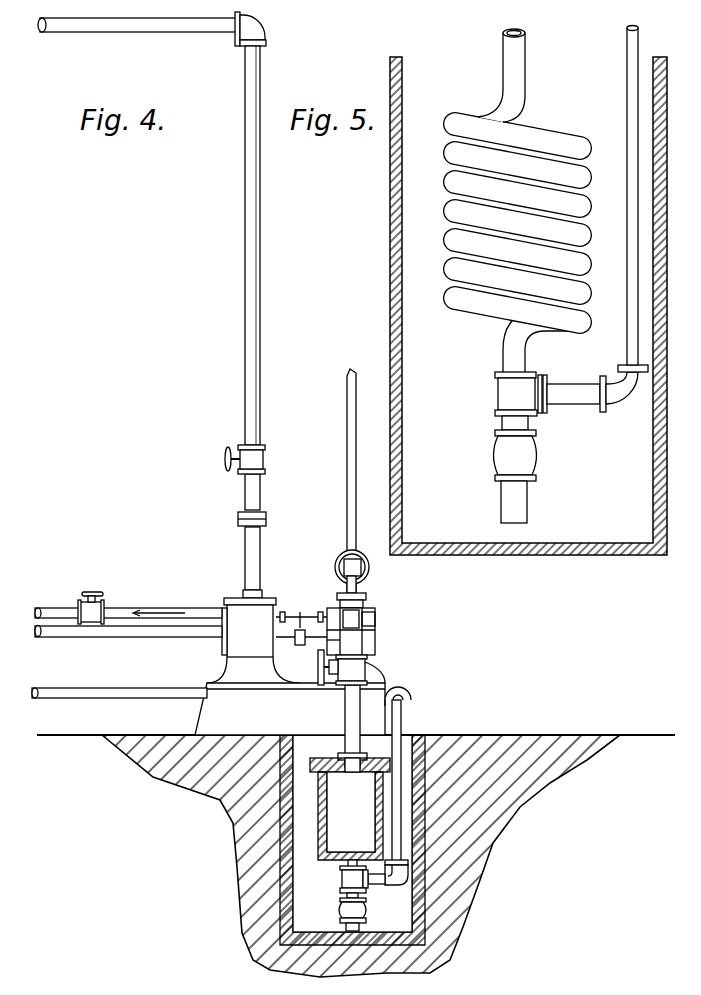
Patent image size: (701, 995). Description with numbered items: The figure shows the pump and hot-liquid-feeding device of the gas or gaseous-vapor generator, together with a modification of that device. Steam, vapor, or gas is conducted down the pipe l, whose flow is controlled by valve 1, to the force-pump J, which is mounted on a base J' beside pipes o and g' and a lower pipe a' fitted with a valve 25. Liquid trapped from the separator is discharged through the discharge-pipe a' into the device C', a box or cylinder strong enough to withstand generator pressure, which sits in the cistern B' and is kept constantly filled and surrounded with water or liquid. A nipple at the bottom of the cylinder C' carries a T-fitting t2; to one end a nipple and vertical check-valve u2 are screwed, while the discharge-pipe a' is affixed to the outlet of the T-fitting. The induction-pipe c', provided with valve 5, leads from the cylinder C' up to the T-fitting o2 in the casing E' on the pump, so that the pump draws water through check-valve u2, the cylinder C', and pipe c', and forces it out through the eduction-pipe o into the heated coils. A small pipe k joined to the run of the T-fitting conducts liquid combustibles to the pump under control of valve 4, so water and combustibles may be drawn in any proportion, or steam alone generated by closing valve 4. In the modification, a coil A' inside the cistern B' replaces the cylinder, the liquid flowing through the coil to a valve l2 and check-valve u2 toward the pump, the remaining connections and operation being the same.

In FIG. 4, the supply pipe l is at (247, 318).
In FIG. 4, the valve 1 is at (238, 459).
In FIG. 4, the small pipe k is at (344, 481).
In FIG. 4, the valve 4 is at (360, 571).
In FIG. 4, the T-fitting o2 is at (349, 619).
In FIG. 4, the valve casing E' is at (368, 624).
In FIG. 4, the induction-pipe c' is at (345, 700).
In FIG. 4, the valve 5 is at (351, 667).
In FIG. 4, the force-pump J is at (253, 636).
In FIG. 4, the base J' is at (290, 709).
In FIG. 4, the eduction-pipe o is at (128, 606).
In FIG. 4, the pipe g' is at (128, 640).
In FIG. 4, the discharge-pipe a' is at (226, 788).
In FIG. 5, the discharge-pipe a' is at (597, 221).
In FIG. 4, the valve 25 is at (91, 601).
In FIG. 4, the cylinder C' is at (350, 809).
In FIG. 4, the cistern B' is at (361, 856).
In FIG. 5, the cistern B' is at (528, 306).
In FIG. 4, the T-fitting t2 is at (341, 884).
In FIG. 4, the vertical check-valve u2 is at (341, 912).
In FIG. 5, the vertical check-valve u2 is at (515, 469).
In FIG. 5, the coil A' is at (496, 200).
In FIG. 5, the valve l2 is at (521, 394).